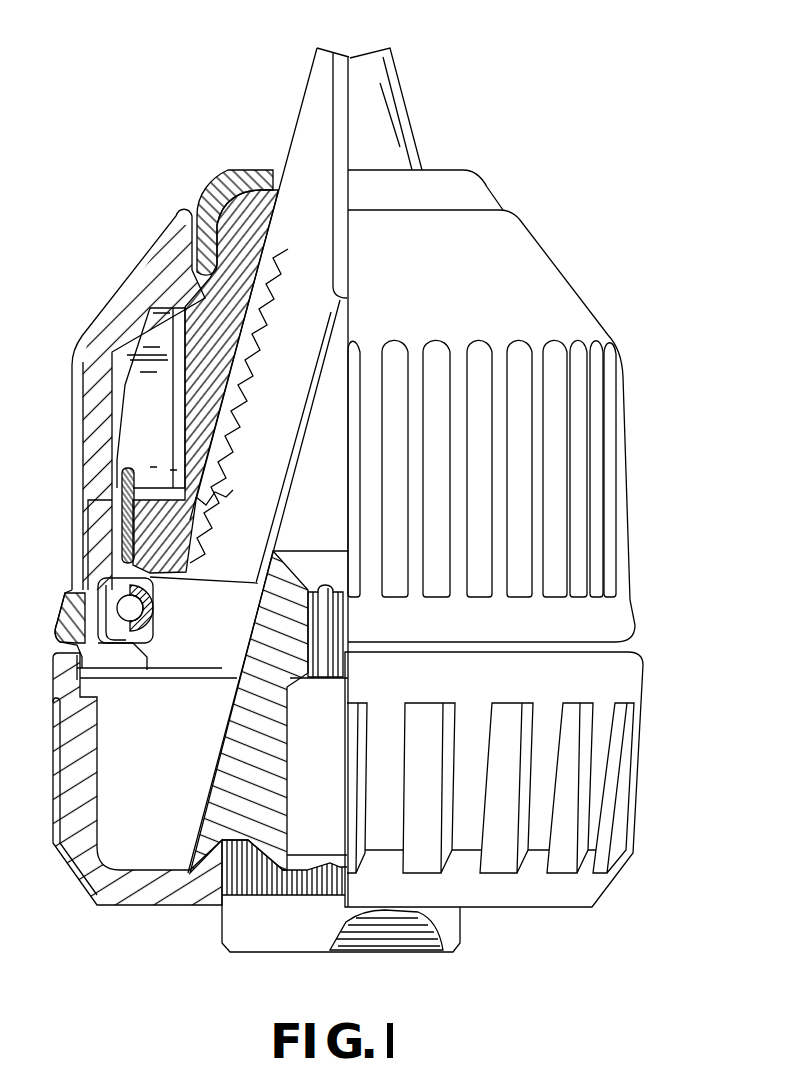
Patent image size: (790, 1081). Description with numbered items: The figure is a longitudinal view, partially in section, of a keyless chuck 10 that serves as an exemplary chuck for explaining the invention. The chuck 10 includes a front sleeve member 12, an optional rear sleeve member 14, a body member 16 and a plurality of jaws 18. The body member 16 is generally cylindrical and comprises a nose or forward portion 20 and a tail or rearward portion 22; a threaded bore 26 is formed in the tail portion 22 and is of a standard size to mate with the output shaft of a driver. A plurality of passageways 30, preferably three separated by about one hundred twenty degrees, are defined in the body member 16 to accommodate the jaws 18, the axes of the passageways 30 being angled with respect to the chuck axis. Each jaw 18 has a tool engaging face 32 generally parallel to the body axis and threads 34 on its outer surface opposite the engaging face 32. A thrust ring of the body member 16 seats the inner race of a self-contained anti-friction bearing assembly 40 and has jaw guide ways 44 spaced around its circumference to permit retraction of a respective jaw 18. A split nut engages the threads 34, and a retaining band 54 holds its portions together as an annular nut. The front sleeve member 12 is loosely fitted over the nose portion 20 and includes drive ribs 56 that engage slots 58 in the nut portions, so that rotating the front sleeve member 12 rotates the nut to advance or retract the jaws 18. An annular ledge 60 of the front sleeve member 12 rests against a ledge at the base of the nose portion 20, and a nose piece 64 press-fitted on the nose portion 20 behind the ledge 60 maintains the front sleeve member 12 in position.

The keyless chuck 10 is at (556, 212).
The front sleeve member 12 is at (552, 273).
The rear sleeve member 14 is at (622, 686).
The body member 16 is at (222, 698).
The jaws 18 is at (300, 147).
The nose or forward portion 20 is at (208, 197).
The tail or rearward portion 22 is at (205, 779).
The threaded bore 26 is at (388, 933).
The passageways 30 is at (242, 342).
The tool engaging face 32 is at (343, 62).
The threads 34 is at (185, 437).
The anti-friction bearing assembly 40 is at (120, 662).
The jaw guide ways 44 is at (232, 643).
The retaining band 54 is at (83, 527).
The drive ribs 56 is at (112, 447).
The slots 58 is at (200, 487).
The annular ledge 60 is at (253, 262).
The nose piece 64 is at (488, 190).